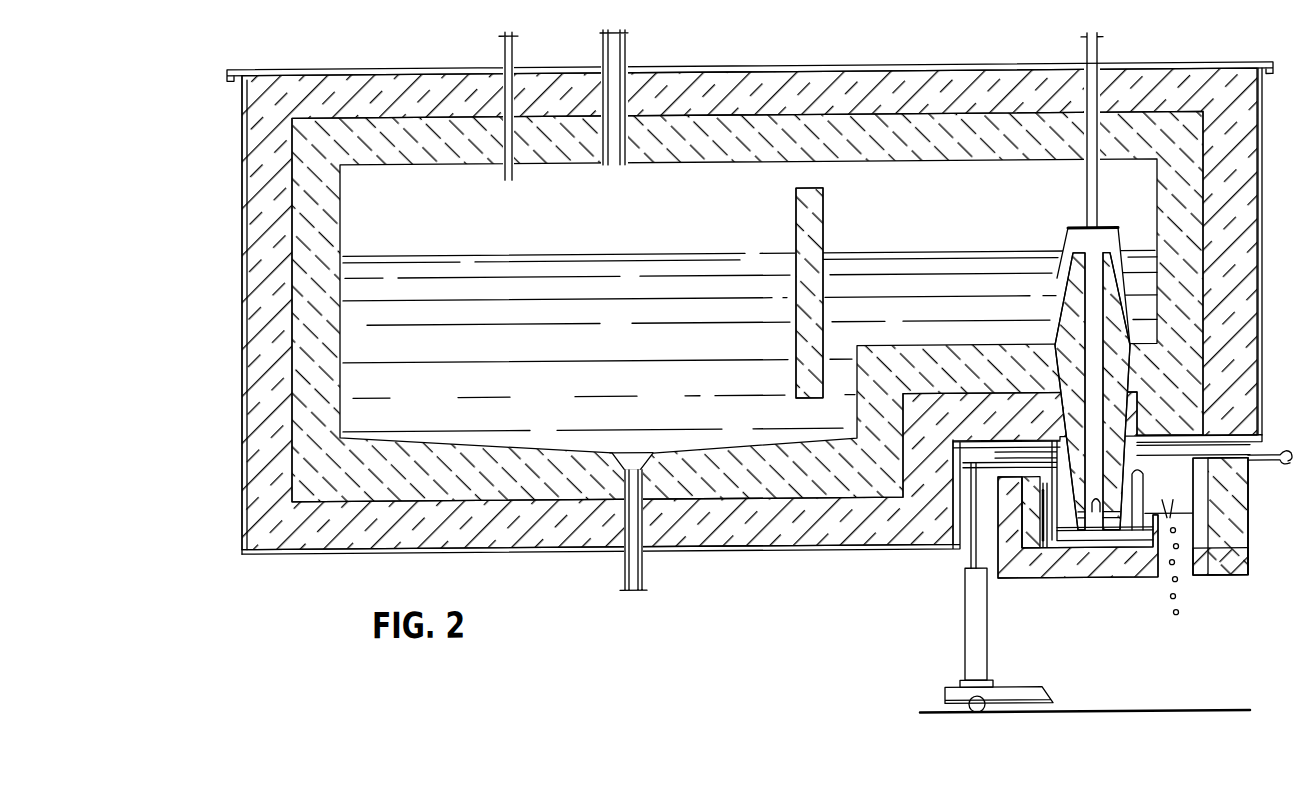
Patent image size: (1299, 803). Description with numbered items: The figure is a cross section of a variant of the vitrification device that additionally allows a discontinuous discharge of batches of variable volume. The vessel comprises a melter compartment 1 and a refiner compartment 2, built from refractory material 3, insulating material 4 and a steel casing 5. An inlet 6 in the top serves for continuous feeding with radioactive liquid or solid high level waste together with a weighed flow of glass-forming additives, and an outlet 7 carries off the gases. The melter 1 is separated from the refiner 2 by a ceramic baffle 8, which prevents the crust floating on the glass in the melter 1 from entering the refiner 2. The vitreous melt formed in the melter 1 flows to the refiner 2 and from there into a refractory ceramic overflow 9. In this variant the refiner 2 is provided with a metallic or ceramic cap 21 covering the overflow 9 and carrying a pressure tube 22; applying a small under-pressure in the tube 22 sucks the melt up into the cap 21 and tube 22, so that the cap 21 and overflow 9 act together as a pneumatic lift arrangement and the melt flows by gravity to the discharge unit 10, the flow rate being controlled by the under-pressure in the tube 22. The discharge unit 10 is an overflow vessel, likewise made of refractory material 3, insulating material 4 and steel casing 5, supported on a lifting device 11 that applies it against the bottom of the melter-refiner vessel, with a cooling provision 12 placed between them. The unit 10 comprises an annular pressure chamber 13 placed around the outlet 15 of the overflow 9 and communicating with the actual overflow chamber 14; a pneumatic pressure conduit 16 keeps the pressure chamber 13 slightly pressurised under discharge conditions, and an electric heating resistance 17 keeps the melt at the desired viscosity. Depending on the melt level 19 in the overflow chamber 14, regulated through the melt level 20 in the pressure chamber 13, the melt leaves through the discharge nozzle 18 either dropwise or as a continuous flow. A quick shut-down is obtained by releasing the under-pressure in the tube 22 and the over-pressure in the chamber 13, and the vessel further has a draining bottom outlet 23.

The melter compartment 1 is at (450, 189).
The refiner compartment 2 is at (913, 272).
The refractory material 3 is at (340, 213).
The insulating material 4 is at (277, 485).
The steel casing 5 is at (1262, 102).
The inlet 6 is at (513, 49).
The outlet for off gases 7 is at (628, 47).
The ceramic baffle 8 is at (823, 232).
The refractory ceramic overflow 9 is at (1113, 300).
The discharge unit 10 is at (1266, 558).
The lifting device 11 is at (947, 693).
The cooling provision 12 is at (1250, 456).
The pressure chamber 13 is at (1047, 538).
The overflow chamber 14 is at (1148, 546).
The outlet of the overflow 15 is at (1108, 534).
The pneumatic pressure conduit 16 is at (880, 562).
The electric heating resistance 17 is at (1045, 553).
The discharge nozzle 18 is at (1182, 531).
The melt level in the overflow chamber 19 is at (1094, 523).
The melt level in the pressure chamber 20 is at (1145, 509).
The cap 21 is at (1066, 252).
The pressure tube 22 is at (1085, 56).
The draining bottom outlet 23 is at (627, 574).